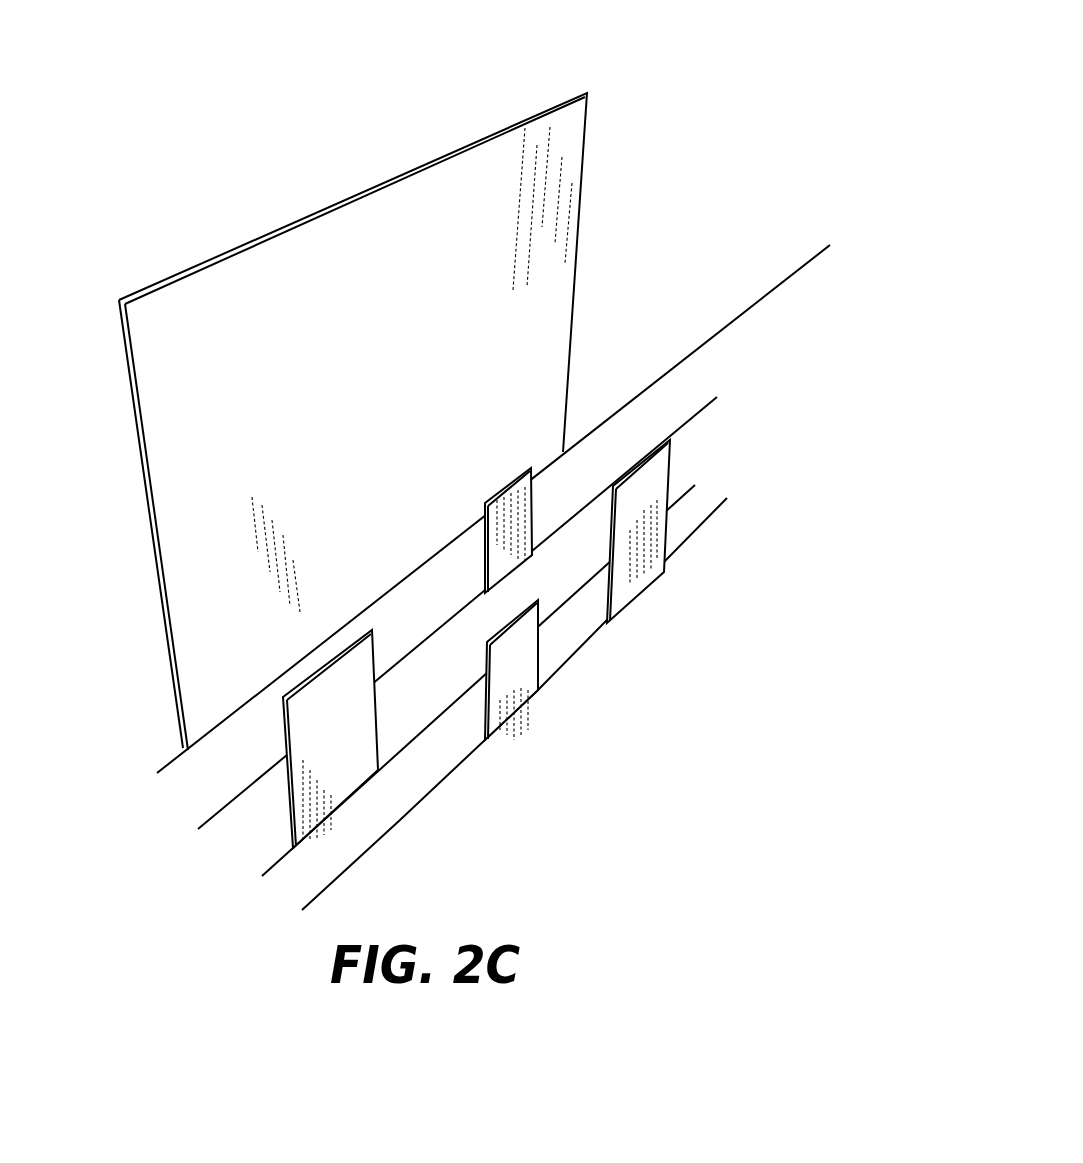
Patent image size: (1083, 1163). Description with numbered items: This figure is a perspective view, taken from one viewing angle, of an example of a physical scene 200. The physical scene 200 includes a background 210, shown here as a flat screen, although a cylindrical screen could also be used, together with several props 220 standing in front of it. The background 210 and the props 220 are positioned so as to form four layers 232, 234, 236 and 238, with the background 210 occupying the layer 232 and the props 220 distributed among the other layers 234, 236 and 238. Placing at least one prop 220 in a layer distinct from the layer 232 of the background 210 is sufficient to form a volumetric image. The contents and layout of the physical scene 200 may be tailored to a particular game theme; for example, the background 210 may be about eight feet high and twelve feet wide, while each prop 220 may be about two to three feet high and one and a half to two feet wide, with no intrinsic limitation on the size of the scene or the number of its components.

The physical scene 200 is at (613, 54).
The background 210 is at (540, 263).
The prop 220 is at (672, 458).
The layer 232 is at (737, 318).
The layer 234 is at (400, 663).
The layer 236 is at (393, 758).
The layer 238 is at (682, 546).